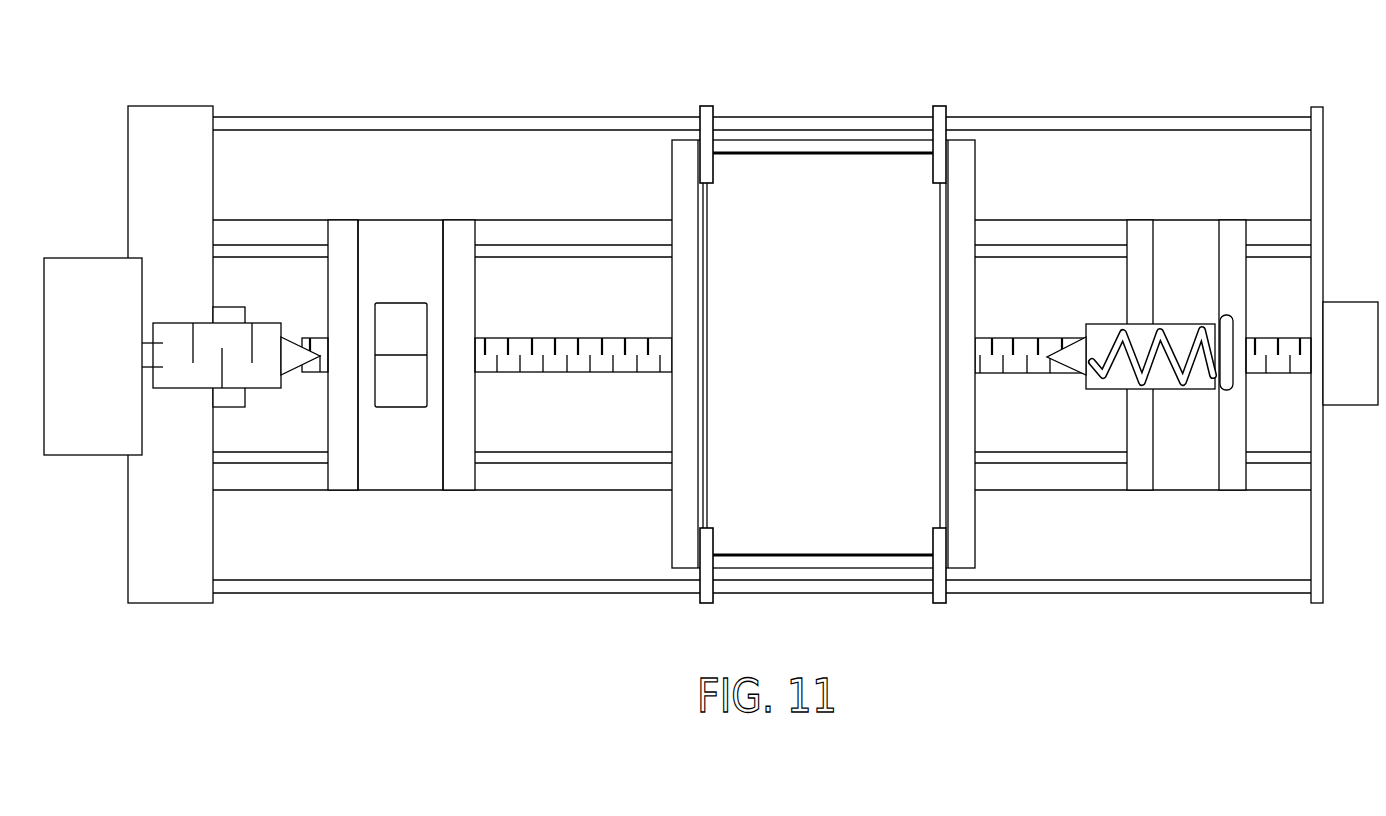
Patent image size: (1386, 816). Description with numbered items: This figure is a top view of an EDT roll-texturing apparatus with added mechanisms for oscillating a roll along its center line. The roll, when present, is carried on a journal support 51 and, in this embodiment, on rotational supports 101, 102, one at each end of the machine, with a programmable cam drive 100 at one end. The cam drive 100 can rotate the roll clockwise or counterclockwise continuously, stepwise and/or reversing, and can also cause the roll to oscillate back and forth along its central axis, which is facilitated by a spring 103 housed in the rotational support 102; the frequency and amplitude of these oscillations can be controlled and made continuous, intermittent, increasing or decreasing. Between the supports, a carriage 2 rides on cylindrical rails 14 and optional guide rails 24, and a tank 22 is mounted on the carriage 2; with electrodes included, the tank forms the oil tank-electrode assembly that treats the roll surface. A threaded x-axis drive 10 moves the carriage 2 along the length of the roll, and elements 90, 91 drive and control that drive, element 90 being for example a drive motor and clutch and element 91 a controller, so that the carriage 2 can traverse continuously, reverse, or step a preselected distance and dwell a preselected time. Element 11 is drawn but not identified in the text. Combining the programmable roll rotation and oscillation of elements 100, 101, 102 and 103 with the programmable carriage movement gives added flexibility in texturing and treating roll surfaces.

The carriage 2 is at (968, 152).
The threaded x-axis drive 10 is at (562, 350).
The tie rod 11 is at (940, 380).
The cylindrical rails 14 is at (547, 252).
The tank 22 is at (797, 148).
The guide rails 24 is at (347, 117).
The journal support 51 is at (400, 313).
The drive motor and clutch 90 is at (1350, 353).
The controller 91 is at (232, 317).
The programmable cam drive 100 is at (93, 356).
The rotational support 101 is at (175, 342).
The rotational support 102 is at (1163, 333).
The spring 103 is at (1178, 378).